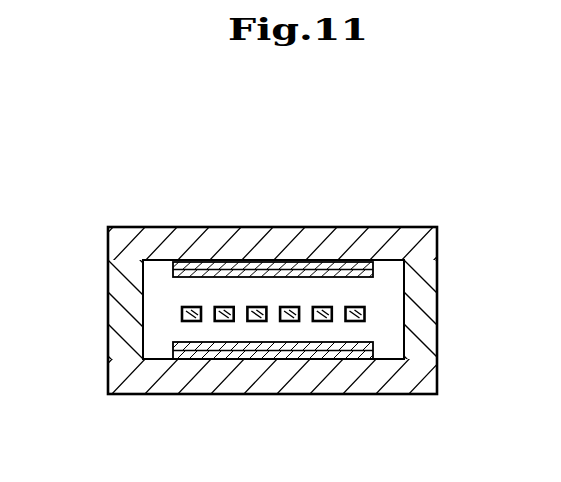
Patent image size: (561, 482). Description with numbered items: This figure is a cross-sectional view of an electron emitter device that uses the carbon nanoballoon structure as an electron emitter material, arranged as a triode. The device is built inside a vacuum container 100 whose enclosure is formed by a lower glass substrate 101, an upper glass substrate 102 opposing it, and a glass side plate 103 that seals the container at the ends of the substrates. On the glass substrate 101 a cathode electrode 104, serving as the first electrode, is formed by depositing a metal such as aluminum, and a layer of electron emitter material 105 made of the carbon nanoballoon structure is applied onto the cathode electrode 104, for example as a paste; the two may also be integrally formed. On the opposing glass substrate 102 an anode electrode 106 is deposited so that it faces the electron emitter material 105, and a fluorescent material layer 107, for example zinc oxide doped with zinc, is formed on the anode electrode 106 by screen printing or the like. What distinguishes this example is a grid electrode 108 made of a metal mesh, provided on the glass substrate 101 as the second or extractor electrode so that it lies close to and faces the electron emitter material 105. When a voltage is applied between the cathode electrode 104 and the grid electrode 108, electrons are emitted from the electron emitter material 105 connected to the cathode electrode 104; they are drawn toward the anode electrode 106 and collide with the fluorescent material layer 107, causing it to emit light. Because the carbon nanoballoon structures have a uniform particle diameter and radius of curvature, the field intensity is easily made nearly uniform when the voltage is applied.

The vacuum container 100 is at (427, 221).
The glass substrate 101 is at (163, 383).
The glass substrate 102 is at (152, 235).
The glass side plate 103 is at (117, 320).
The cathode electrode 104 is at (218, 356).
The electron emitter material 105 is at (294, 356).
The anode electrode 106 is at (231, 266).
The fluorescent material layer 107 is at (293, 262).
The grid electrode 108 is at (358, 322).